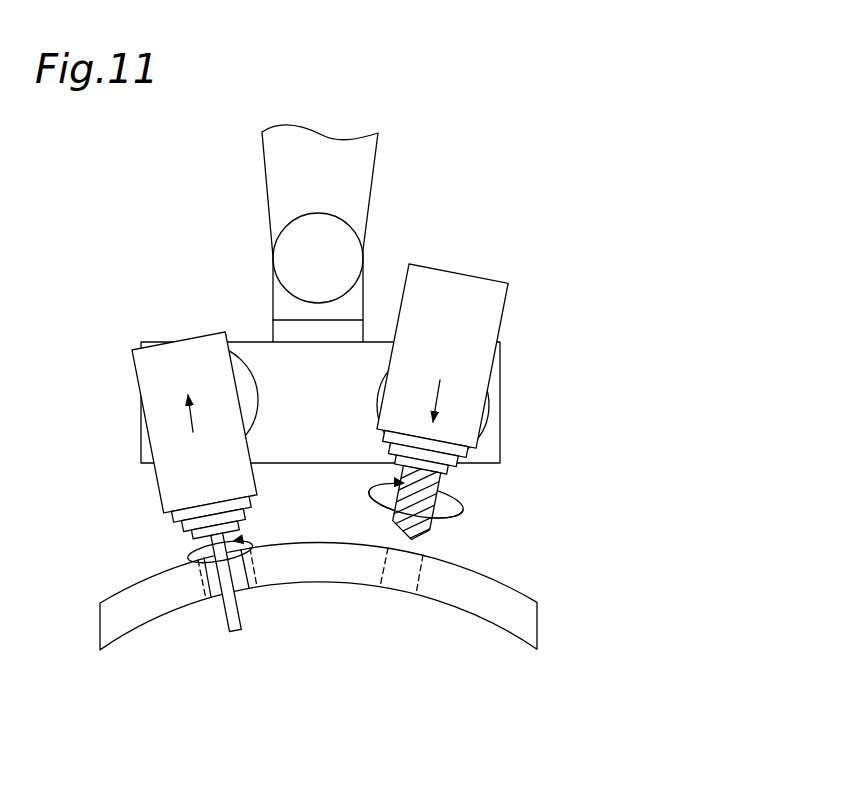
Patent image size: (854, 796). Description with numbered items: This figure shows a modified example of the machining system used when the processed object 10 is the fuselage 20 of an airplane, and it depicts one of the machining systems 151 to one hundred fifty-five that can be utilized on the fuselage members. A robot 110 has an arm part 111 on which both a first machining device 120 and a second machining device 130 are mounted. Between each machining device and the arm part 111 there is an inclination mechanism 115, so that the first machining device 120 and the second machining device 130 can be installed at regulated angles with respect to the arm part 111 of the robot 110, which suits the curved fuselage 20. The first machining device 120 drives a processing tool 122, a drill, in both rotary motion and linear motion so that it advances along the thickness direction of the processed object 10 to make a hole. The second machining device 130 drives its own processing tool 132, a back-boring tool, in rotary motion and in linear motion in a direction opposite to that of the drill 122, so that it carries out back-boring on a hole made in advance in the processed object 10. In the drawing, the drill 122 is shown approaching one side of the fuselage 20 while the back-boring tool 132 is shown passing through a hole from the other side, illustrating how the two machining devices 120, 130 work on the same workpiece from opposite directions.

The robot 110 is at (397, 147).
The arm part 111 is at (320, 437).
The inclination mechanism 115 is at (255, 372).
The first machining device 120 is at (489, 422).
The processing tool 122 is at (425, 527).
The second machining device 130 is at (158, 517).
The processing tool 132 is at (225, 615).
The fuselage 20 is at (527, 588).
The processed object 10 is at (386, 595).
The machining system 151 is at (715, 228).